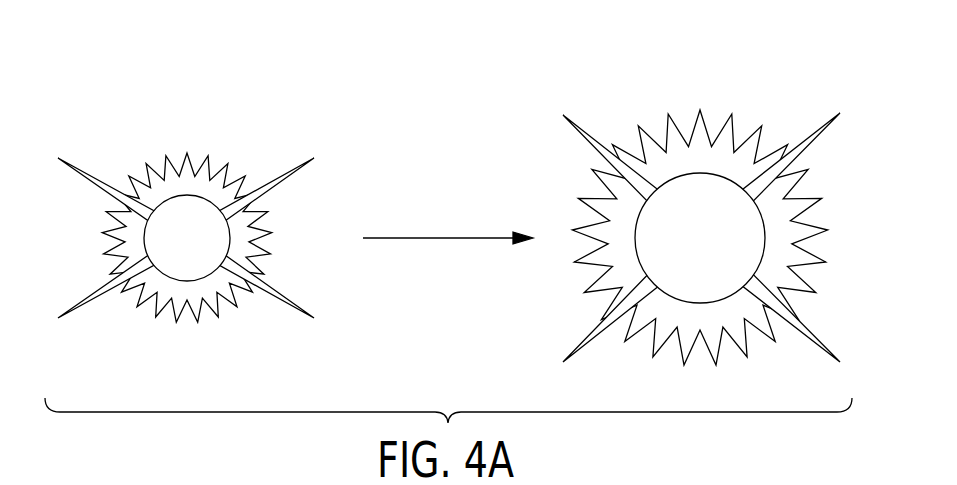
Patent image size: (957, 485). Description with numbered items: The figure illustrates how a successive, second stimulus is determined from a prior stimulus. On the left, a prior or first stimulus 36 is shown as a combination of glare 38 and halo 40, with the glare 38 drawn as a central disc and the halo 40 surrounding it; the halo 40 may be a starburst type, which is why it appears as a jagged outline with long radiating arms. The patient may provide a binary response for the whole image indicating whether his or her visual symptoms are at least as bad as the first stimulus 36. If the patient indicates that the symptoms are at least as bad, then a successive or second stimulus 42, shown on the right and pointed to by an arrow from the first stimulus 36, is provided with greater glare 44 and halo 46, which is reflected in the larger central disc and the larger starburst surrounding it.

The first stimulus 36 is at (194, 174).
The glare 38 is at (270, 211).
The halo 40 is at (277, 177).
The second stimulus 42 is at (724, 183).
The glare 44 is at (828, 200).
The halo 46 is at (813, 133).